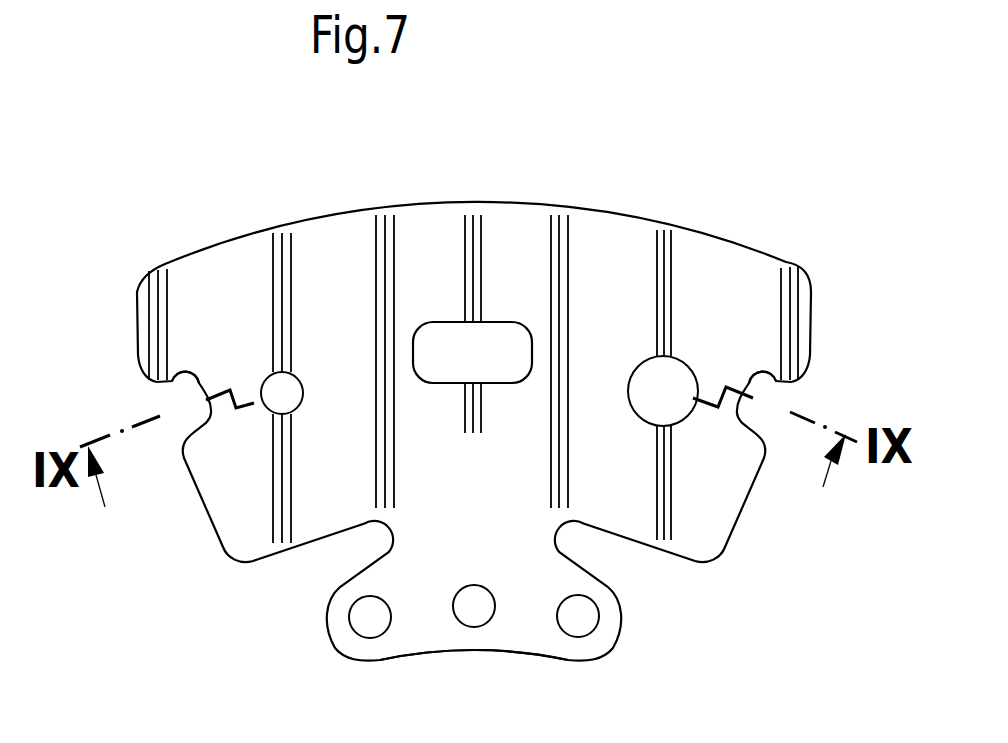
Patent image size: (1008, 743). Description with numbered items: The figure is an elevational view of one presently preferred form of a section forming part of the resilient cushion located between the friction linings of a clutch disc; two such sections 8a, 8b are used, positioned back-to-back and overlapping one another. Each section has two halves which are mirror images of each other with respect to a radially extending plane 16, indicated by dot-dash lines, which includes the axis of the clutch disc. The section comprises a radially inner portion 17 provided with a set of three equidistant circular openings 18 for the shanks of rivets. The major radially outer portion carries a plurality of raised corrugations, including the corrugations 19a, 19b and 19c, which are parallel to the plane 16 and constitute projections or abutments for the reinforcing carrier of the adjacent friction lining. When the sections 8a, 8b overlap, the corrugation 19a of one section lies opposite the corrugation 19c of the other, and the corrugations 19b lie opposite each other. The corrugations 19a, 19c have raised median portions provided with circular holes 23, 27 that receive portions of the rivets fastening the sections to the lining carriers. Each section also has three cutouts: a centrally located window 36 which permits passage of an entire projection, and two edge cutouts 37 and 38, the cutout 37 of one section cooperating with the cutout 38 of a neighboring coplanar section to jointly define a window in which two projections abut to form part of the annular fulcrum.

The section 8a is at (474, 404).
The section 8b is at (600, 233).
The radially extending plane 16 is at (472, 218).
The radially inner portion 17 is at (430, 643).
The circular openings 18 is at (362, 617).
The corrugation 19a is at (278, 253).
The corrugation 19b is at (467, 250).
The corrugation 19c is at (668, 237).
The circular hole 23 is at (275, 403).
The circular hole 27 is at (679, 410).
The window 36 is at (505, 330).
The cutout 37 is at (768, 383).
The cutout 38 is at (177, 390).